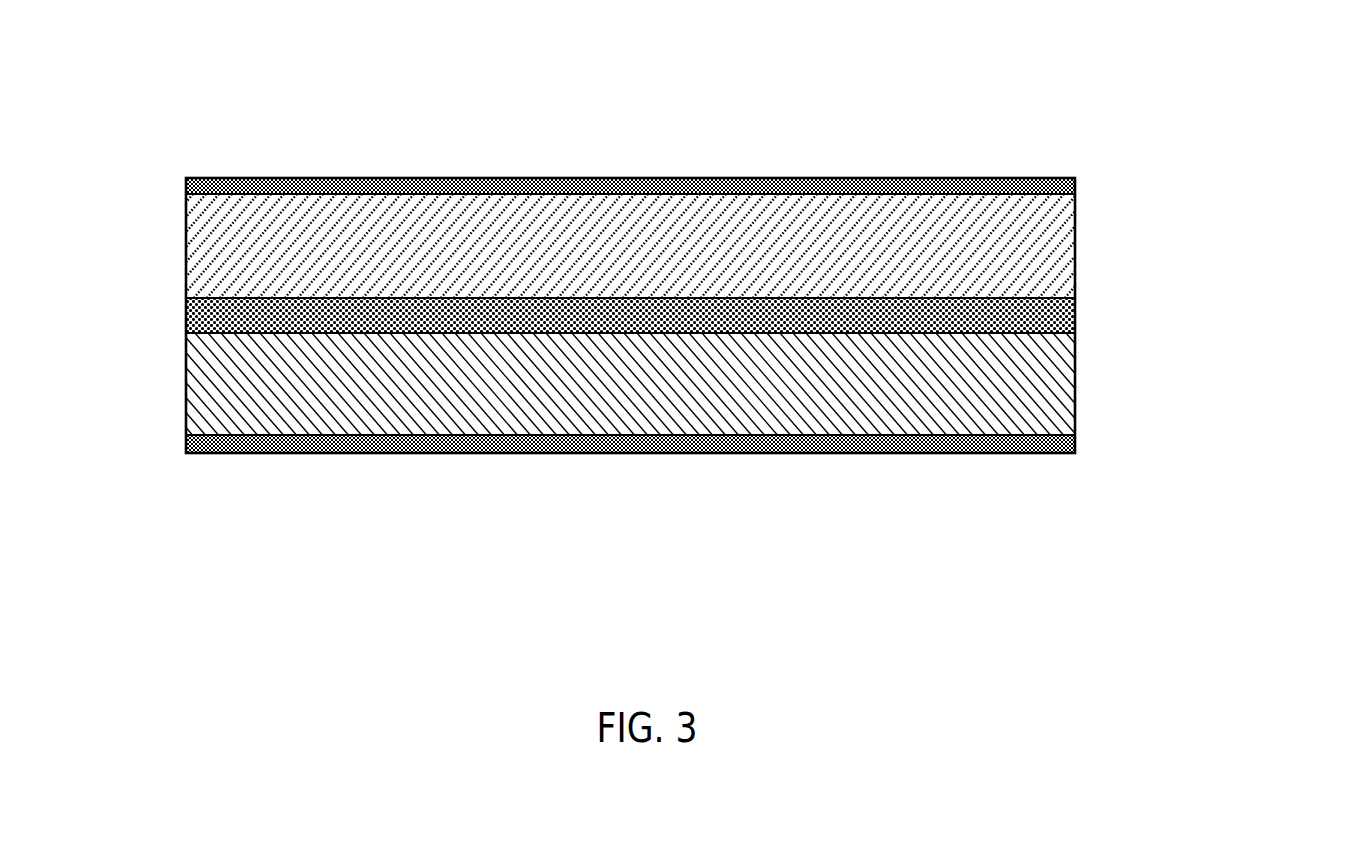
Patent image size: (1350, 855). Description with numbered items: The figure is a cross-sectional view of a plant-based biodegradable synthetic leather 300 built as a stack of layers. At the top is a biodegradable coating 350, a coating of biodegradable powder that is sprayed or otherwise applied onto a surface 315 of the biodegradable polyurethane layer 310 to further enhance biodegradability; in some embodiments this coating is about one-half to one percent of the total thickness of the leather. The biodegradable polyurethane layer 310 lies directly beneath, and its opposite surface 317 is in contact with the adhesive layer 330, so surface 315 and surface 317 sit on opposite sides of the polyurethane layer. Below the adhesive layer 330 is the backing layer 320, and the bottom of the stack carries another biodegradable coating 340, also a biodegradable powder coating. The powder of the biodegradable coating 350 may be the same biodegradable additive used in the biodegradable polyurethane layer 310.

The plant-based biodegradable synthetic leather 300 is at (607, 98).
The biodegradable coating 350 is at (1047, 190).
The biodegradable polyurethane layer 310 is at (1058, 227).
The surface 315 is at (273, 196).
The surface 317 is at (287, 296).
The adhesive layer 330 is at (1060, 308).
The backing layer 320 is at (1060, 382).
The biodegradable coating 340 is at (1060, 440).